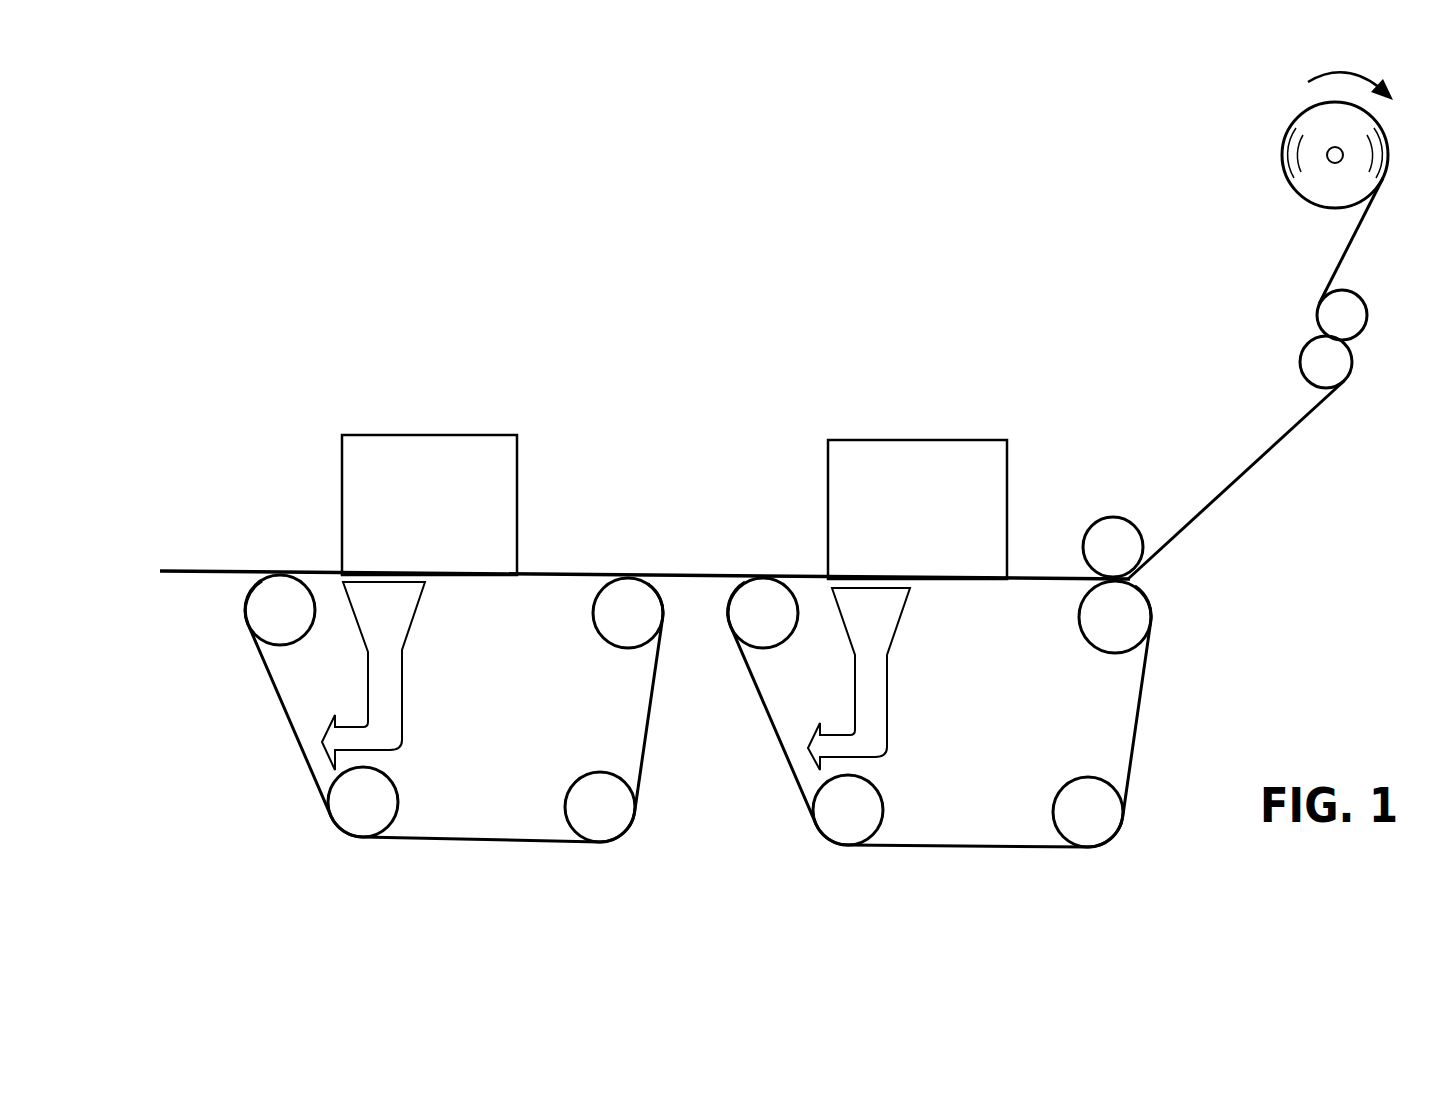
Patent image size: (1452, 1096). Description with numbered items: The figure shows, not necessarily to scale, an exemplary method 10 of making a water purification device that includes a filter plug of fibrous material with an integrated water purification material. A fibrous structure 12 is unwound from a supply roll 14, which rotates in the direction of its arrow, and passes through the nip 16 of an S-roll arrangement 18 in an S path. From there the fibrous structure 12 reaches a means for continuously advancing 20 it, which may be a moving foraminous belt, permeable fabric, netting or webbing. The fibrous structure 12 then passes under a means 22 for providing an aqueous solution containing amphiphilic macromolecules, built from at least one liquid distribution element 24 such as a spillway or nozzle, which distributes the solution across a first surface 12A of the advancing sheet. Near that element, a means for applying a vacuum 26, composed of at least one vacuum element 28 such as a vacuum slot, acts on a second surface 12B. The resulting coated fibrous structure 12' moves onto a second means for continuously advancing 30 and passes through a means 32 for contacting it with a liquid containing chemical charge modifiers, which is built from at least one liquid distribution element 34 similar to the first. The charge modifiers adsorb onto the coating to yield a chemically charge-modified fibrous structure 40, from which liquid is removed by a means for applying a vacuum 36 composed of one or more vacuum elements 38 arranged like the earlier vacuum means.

The method of making a water purification device 10 is at (1058, 180).
The fibrous structure 12 is at (771, 378).
The coated fibrous structure 12' is at (683, 540).
The first surface 12A is at (1037, 577).
The second surface 12B is at (1006, 595).
The supply roll 14 is at (1390, 143).
The nip 16 is at (1282, 341).
The S-roll arrangement 18 is at (1383, 395).
The means for continuously advancing 20 is at (1178, 657).
The means for providing an aqueous solution containing amphiphilic macromolecules 22 is at (962, 402).
The liquid distribution element 24 is at (918, 501).
The means for applying a vacuum 26 is at (883, 763).
The vacuum element 28 is at (859, 679).
The second means for continuously advancing 30 is at (698, 662).
The means for contacting the sheet with a liquid containing chemical charge modifier 32 is at (480, 397).
The liquid distribution element 34 is at (430, 498).
The means for applying a vacuum 36 is at (397, 757).
The vacuum element 38 is at (373, 676).
The chemically charge-modified fibrous structure 40 is at (262, 568).